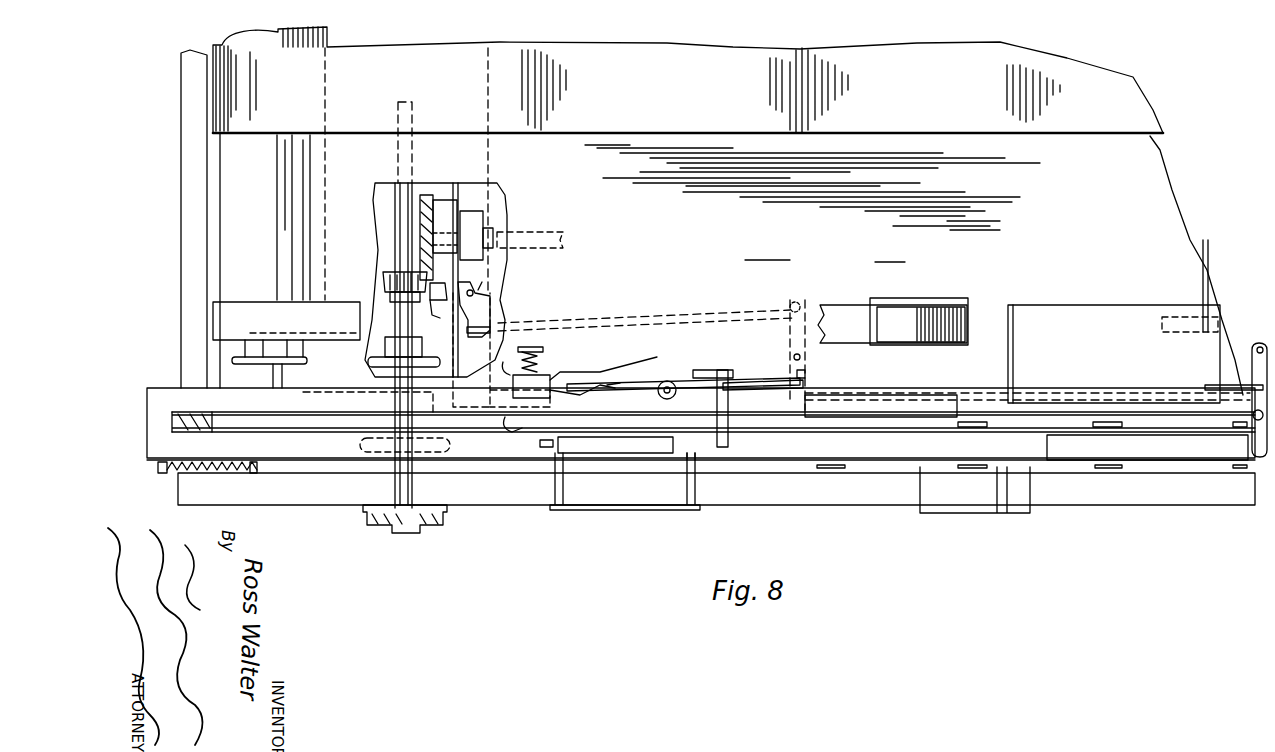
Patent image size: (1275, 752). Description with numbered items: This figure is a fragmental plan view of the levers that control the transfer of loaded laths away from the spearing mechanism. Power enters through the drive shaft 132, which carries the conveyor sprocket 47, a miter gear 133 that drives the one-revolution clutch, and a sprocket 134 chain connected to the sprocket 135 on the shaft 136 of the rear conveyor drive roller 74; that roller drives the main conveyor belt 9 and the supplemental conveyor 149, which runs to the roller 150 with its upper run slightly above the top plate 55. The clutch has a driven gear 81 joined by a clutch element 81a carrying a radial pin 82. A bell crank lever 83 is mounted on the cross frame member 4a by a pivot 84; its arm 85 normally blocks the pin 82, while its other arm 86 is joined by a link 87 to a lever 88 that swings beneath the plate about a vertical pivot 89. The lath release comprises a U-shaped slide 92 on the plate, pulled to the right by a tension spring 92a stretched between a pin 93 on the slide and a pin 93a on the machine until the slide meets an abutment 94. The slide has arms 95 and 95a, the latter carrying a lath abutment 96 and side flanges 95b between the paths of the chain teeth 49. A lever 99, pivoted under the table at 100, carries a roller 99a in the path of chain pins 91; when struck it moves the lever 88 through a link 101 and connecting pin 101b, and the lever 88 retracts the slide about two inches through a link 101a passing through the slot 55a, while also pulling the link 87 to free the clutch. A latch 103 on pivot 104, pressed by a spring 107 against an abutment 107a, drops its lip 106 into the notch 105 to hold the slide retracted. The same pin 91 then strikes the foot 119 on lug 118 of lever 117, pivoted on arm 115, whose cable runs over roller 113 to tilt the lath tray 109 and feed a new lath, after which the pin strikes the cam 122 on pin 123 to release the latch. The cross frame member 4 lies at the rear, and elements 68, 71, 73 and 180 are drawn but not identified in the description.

The cross frame member 4 is at (184, 238).
The cross frame member 4a is at (490, 152).
The conveyor belt 9 is at (598, 52).
The sprocket 47 is at (360, 453).
The teeth or fingers 49 is at (843, 470).
The top plate 55 is at (1170, 193).
The slot in top plate 55a is at (805, 374).
The block 68 is at (1122, 328).
The rod 71 is at (1210, 273).
The slot 73 is at (1162, 332).
The rear conveyor drive roller 74 is at (228, 162).
The driven gear element 81 is at (425, 205).
The clutch element 81a is at (490, 222).
The radial pin 82 is at (445, 299).
The bell crank lever 83 is at (487, 307).
The pivot 84 is at (478, 292).
The arm of bell crank 85 is at (434, 320).
The arm of bell crank 86 is at (470, 321).
The link 87 is at (630, 322).
The lever 88 is at (813, 307).
The pivot 89 is at (802, 357).
The pin 91 is at (817, 420).
The slide member 92 is at (146, 381).
The tension spring 92a is at (233, 473).
The pin 93 is at (157, 467).
The pin 93a is at (260, 468).
The abutment 94 is at (207, 416).
The slide arm 95 is at (303, 397).
The slide arm 95a is at (207, 477).
The upstanding side flanges 95b is at (1063, 460).
The lath engaging abutment 96 is at (1037, 460).
The lever 99 is at (1253, 363).
The roller 99a is at (1147, 447).
The pivot 100 is at (1258, 343).
The link 101 is at (980, 392).
The link 101a is at (760, 385).
The connecting pin 101b is at (790, 397).
The latch member 103 is at (542, 386).
The pivot 104 is at (580, 380).
The notch 105 is at (607, 388).
The lip of latch 106 is at (517, 373).
The spring 107 is at (545, 347).
The abutment 107a is at (547, 325).
The lath tray 109 is at (620, 445).
The roller 113 is at (540, 447).
The upstanding arm 115 is at (618, 510).
The lever 117 is at (700, 452).
The lug 118 is at (722, 370).
The foot portion 119 is at (728, 390).
The cam member 122 is at (514, 430).
The pin 123 is at (528, 397).
The drive shaft 132 is at (405, 192).
The miter gear 133 is at (390, 282).
The sprocket 134 is at (372, 357).
The sprocket 135 is at (274, 336).
The shaft 136 is at (280, 380).
The supplemental conveyor 149 is at (248, 308).
The roller 150 is at (938, 300).
The drum 180 is at (462, 216).